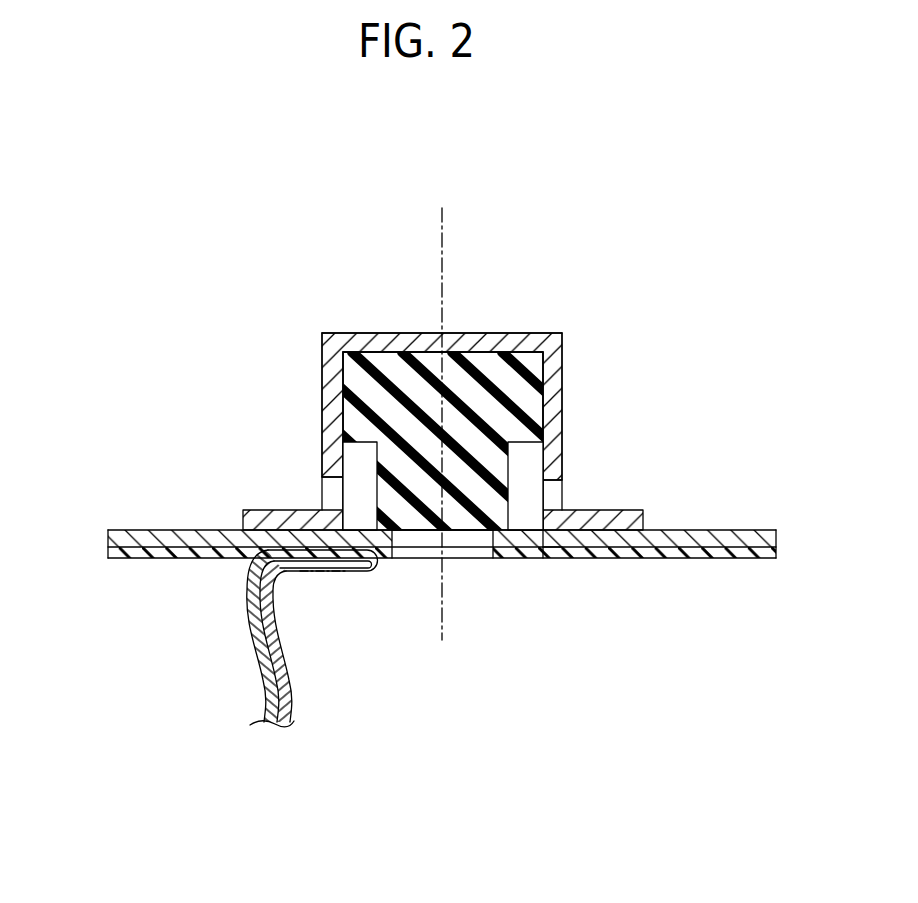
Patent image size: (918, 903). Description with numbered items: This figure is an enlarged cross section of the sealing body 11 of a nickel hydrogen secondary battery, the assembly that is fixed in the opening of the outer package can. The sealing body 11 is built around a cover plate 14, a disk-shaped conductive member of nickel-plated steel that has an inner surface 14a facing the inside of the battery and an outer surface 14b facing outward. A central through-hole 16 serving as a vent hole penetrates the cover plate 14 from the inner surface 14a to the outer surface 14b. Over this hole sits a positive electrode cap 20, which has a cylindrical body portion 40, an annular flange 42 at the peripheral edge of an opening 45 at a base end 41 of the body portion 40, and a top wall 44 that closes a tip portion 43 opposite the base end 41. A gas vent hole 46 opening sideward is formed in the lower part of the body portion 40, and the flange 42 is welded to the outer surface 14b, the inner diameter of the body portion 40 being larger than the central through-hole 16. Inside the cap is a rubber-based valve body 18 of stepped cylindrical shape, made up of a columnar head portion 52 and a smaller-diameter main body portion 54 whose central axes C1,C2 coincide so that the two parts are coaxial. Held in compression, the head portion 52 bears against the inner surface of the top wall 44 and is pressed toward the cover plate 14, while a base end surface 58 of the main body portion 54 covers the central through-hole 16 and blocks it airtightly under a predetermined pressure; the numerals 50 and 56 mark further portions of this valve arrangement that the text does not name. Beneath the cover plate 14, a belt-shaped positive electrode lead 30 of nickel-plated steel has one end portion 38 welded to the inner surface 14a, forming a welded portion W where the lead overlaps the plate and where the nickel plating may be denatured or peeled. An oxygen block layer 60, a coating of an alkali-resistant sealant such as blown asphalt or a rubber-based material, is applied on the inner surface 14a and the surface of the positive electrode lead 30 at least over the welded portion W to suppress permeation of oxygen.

The sealing body 11 is at (338, 320).
The cover plate 14 is at (409, 545).
The inner surface 14a is at (130, 558).
The outer surface 14b is at (137, 530).
The central through-hole 16 is at (483, 542).
The valve body 18 is at (383, 348).
The positive electrode cap 20 is at (322, 333).
The positive electrode lead 30 is at (268, 724).
The one end portion 38 is at (313, 559).
The body portion 40 is at (460, 387).
The base end 41 is at (553, 548).
The flange 42 is at (615, 510).
The tip portion 43 is at (563, 333).
The top wall 44 is at (483, 333).
The opening 45 is at (532, 515).
The gas vent hole 46 is at (335, 481).
The first terminal 50 is at (360, 500).
The head portion 52 is at (517, 338).
The main body portion 54 is at (523, 496).
The inner side surface 56 is at (545, 368).
The base end surface 58 is at (413, 531).
The oxygen block layer 60 is at (182, 558).
The welded portion W is at (332, 572).
The central axes C1,C2 is at (443, 233).